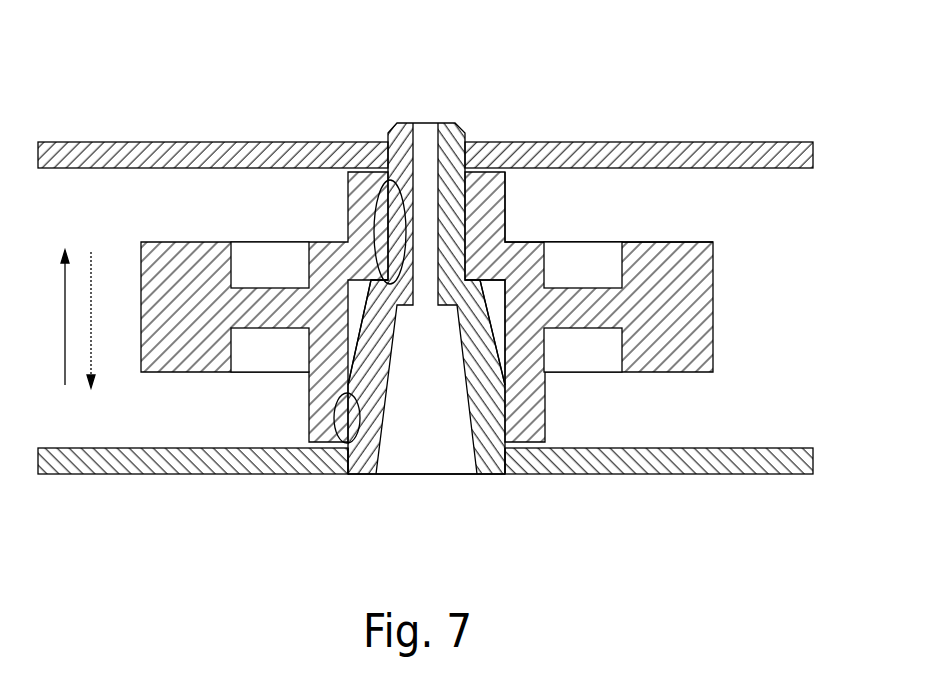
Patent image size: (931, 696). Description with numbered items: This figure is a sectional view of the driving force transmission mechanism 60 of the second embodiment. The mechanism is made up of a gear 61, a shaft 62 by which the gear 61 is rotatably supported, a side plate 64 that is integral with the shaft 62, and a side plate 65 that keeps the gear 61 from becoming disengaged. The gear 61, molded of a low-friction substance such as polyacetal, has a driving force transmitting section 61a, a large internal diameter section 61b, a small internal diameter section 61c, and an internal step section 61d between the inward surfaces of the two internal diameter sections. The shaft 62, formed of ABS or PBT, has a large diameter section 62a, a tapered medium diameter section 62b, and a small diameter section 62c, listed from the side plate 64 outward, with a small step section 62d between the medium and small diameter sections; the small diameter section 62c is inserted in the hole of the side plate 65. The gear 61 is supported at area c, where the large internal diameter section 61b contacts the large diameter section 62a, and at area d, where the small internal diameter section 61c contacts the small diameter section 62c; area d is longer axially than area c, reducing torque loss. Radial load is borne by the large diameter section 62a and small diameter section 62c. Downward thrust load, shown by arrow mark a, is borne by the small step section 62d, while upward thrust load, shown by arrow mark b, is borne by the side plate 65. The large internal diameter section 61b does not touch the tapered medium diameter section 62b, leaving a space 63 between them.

The driving force transmission mechanism 60 is at (436, 293).
The gear 61 is at (487, 312).
The driving force transmitting section 61a is at (685, 322).
The large internal diameter section 61b is at (523, 437).
The small internal diameter section 61c is at (478, 172).
The internal step section 61d is at (507, 227).
The shaft 62 is at (424, 285).
The large diameter section 62a is at (486, 432).
The medium diameter section 62b is at (358, 337).
The small diameter section 62c is at (453, 123).
The small step section 62d is at (472, 281).
The space 63 is at (495, 327).
The side plate 64 is at (173, 463).
The side plate 65 is at (163, 153).
The arrow mark a is at (99, 320).
The arrow mark b is at (55, 317).
The area c is at (335, 400).
The area d is at (370, 218).